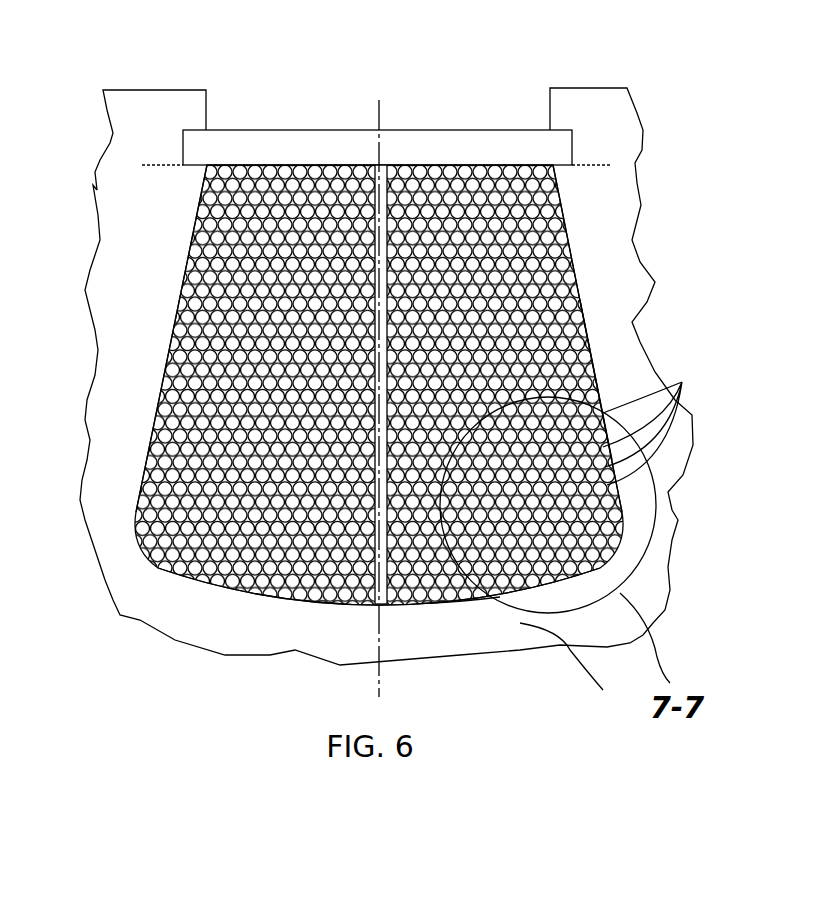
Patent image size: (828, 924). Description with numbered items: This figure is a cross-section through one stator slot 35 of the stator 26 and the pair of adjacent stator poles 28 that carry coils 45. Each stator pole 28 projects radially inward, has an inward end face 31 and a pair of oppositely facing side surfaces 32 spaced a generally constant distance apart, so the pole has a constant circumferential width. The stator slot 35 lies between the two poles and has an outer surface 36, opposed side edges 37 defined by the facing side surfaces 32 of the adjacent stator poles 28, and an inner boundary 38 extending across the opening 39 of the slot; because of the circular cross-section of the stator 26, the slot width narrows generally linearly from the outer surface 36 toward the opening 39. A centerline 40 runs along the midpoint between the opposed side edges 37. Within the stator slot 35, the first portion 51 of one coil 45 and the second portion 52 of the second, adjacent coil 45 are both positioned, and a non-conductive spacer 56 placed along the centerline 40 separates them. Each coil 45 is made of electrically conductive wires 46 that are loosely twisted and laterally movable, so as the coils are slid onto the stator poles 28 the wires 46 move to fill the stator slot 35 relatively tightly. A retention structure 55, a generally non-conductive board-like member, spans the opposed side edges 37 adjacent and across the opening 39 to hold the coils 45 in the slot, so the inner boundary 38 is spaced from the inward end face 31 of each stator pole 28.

The stator 26 is at (574, 662).
The stator pole 28 is at (117, 292).
The inward end face 31 is at (152, 90).
The side surface 32 is at (180, 303).
The stator slot 35 is at (243, 605).
The outer surface 36 is at (467, 603).
The side edge 37 is at (605, 405).
The inner boundary 38 is at (592, 160).
The opening 39 is at (279, 112).
The centerline 40 is at (380, 112).
The coil 45 is at (173, 255).
The electrically conductive wire 46 is at (647, 421).
The first portion 51 is at (603, 363).
The second portion 52 is at (165, 292).
The retention structure 55 is at (335, 148).
The non-conductive spacer 56 is at (383, 607).